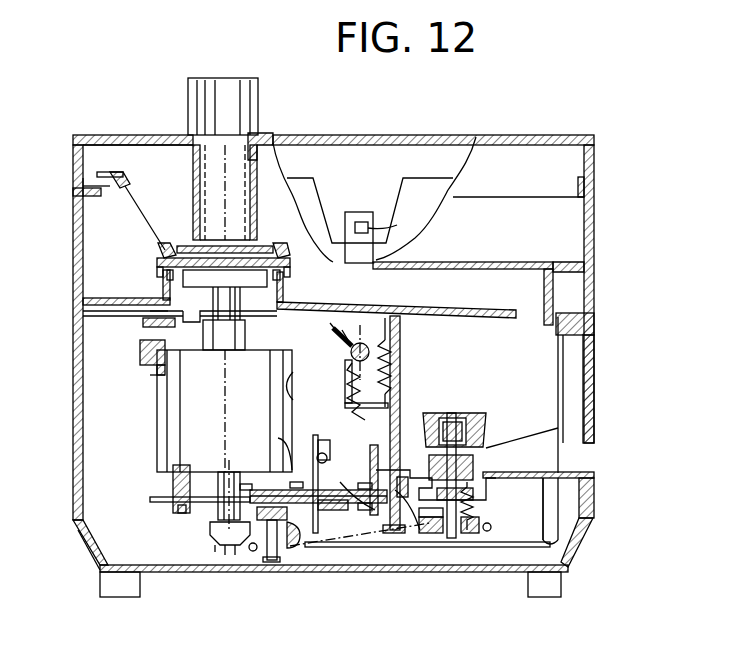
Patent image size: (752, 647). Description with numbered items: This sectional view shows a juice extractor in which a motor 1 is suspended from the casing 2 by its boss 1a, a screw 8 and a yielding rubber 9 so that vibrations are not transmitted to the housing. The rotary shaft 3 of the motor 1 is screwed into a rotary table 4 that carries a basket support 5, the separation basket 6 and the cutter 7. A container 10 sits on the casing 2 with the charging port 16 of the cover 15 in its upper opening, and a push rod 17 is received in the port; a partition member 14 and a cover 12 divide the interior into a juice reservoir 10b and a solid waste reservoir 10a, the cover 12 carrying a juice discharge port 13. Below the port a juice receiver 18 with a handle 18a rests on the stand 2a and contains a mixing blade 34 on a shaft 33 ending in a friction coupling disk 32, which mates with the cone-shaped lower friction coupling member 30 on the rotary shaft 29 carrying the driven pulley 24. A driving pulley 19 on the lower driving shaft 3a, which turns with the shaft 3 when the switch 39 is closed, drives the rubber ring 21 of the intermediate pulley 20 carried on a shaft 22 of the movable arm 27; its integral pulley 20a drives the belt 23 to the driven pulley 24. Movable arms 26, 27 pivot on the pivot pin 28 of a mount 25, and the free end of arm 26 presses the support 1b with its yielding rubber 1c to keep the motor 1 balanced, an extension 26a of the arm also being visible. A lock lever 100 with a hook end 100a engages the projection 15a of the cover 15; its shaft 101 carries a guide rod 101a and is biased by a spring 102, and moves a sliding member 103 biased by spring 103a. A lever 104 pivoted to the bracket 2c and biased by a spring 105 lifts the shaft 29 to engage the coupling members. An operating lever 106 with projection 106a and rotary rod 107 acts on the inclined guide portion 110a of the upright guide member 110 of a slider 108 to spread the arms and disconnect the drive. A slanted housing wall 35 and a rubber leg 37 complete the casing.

The motor 1 is at (163, 437).
The boss 1a is at (152, 368).
The support 1b is at (185, 512).
The yielding rubber 1c is at (175, 505).
The casing 2 is at (73, 445).
The stand 2a is at (594, 488).
The bracket 2c is at (553, 527).
The rotary shaft 3 is at (222, 320).
The lower driving shaft 3a is at (218, 500).
The rotary table 4 is at (185, 280).
The basket support 5 is at (157, 268).
The separation basket 6 is at (150, 213).
The cutter 7 is at (188, 243).
The screw 8 is at (140, 350).
The yielding rubber 9 is at (143, 328).
The container 10 is at (78, 228).
The solid waste reservoir 10a is at (586, 205).
The juice reservoir 10b is at (98, 257).
The cover 12 is at (537, 262).
The juice discharge port 13 is at (497, 292).
The partition member 14 is at (76, 192).
The cover 15 is at (78, 165).
The projection 15a is at (386, 243).
The charging port 16 is at (255, 165).
The push rod 17 is at (222, 95).
The juice receiver 18 is at (540, 365).
The handle 18a is at (580, 325).
The driving pulley 19 is at (212, 540).
The intermediate pulley 20 is at (274, 562).
The pulley 20a is at (255, 552).
The rubber ring 21 is at (236, 522).
The shaft 22 is at (285, 548).
The endless belt 23 is at (487, 532).
The driven pulley 24 is at (452, 540).
The mount 25 is at (435, 535).
The movable arm 26 is at (352, 510).
The mounting plate extension 26a is at (160, 497).
The movable arm 27 is at (292, 500).
The pivot pin 28 is at (360, 520).
The rotary shaft 29 is at (478, 497).
The lower friction coupling member 30 is at (420, 480).
The friction coupling disk 32 is at (473, 467).
The shaft 33 is at (458, 437).
The mixing blade 34 is at (438, 418).
The housing slant wall 35 is at (84, 540).
The rubber leg 37 is at (565, 580).
The switch 39 is at (300, 495).
The lock lever 100 is at (350, 250).
The hook end 100a is at (352, 212).
The shaft 101 is at (365, 345).
The guide rod 101a is at (342, 330).
The spring 102 is at (340, 482).
The sliding member 103 is at (392, 535).
The spring 103a is at (400, 340).
The lever 104 is at (408, 547).
The spring 105 is at (543, 545).
The operating lever 106 is at (315, 435).
The projection 106a is at (295, 400).
The rotary rod 107 is at (324, 442).
The slider 108 is at (335, 530).
The upright guide member 110 is at (412, 510).
The inclined guide portion 110a is at (326, 456).